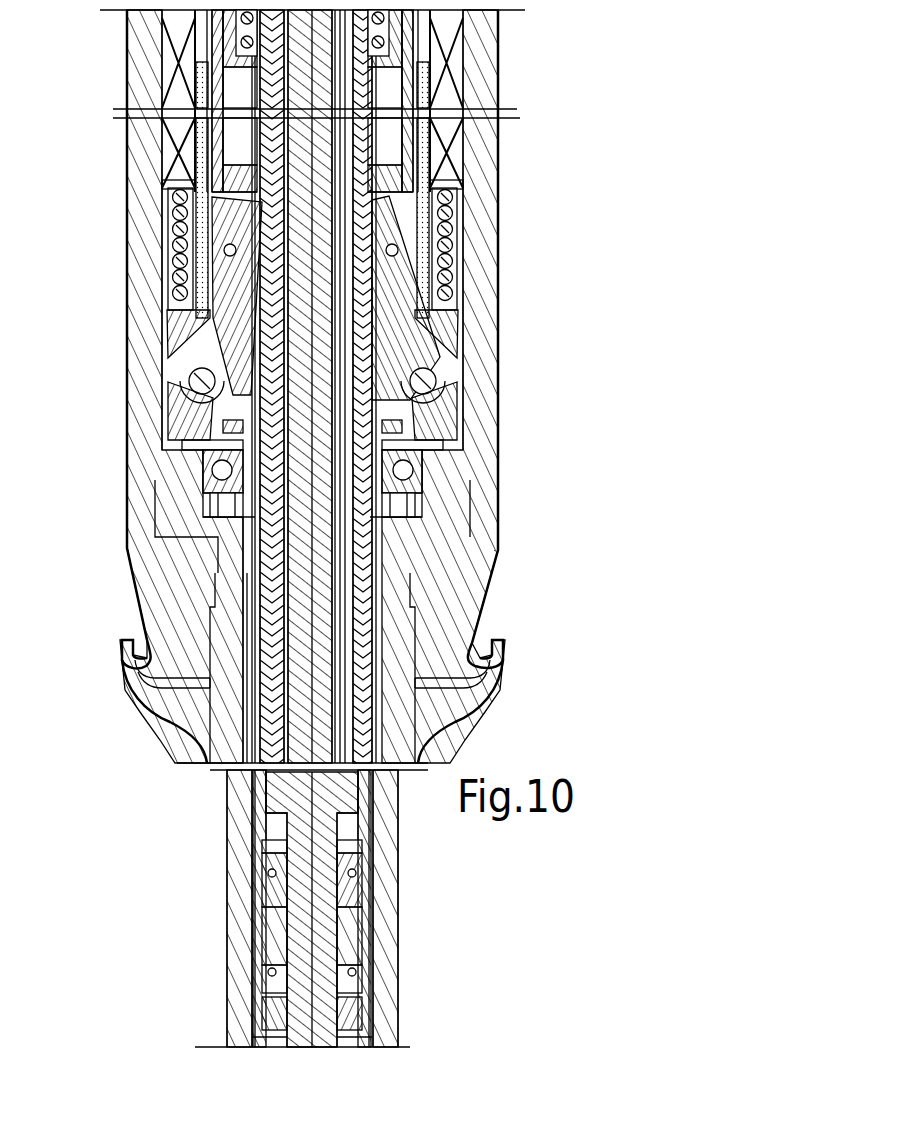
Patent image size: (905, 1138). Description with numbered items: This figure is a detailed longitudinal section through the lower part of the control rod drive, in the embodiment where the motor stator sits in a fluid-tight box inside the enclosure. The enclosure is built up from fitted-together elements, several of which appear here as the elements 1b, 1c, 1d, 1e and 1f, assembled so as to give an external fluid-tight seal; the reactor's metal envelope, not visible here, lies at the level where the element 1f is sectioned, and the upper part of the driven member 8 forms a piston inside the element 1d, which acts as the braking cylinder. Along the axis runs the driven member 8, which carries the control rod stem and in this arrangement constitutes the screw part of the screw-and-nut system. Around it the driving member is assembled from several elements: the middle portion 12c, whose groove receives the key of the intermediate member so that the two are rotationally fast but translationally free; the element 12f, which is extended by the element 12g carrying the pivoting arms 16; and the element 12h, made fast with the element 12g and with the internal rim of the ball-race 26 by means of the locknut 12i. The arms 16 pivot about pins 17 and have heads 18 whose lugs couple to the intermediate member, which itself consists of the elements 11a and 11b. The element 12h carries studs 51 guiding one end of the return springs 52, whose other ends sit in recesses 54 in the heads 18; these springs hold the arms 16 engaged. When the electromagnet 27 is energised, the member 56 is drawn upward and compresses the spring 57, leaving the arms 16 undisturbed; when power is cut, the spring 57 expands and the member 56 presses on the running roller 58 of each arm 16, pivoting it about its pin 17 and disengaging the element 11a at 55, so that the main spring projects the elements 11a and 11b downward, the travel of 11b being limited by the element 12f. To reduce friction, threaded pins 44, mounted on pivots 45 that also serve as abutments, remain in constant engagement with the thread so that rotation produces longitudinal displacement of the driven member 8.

The enclosure element 1b is at (137, 183).
The enclosure element 1c is at (485, 290).
The enclosure element 1d is at (185, 525).
The enclosure element 1e is at (185, 712).
The enclosure element 1f is at (245, 733).
The driven member 8 is at (325, 622).
The electromagnet 27 is at (160, 55).
The spring 57 is at (200, 300).
The middle portion of driving member 12c is at (440, 148).
The intermediate member element 11a is at (445, 86).
The intermediate member element 11b is at (398, 46).
The driving member element 12g is at (172, 228).
The disengagement point 55 is at (450, 246).
The driving member element 12f is at (450, 184).
The pin 17 is at (228, 258).
The arm 16 is at (205, 338).
The member 56 is at (465, 320).
The running roller 58 is at (190, 388).
The return spring 52 is at (430, 410).
The head of arm 18 is at (195, 427).
The recess 54 is at (440, 418).
The stud 51 is at (470, 448).
The ball-race 26 is at (215, 474).
The driving member element 12h is at (445, 462).
The locknut 12i is at (430, 505).
The threaded pin 44 is at (350, 925).
The pivot 45 is at (345, 893).